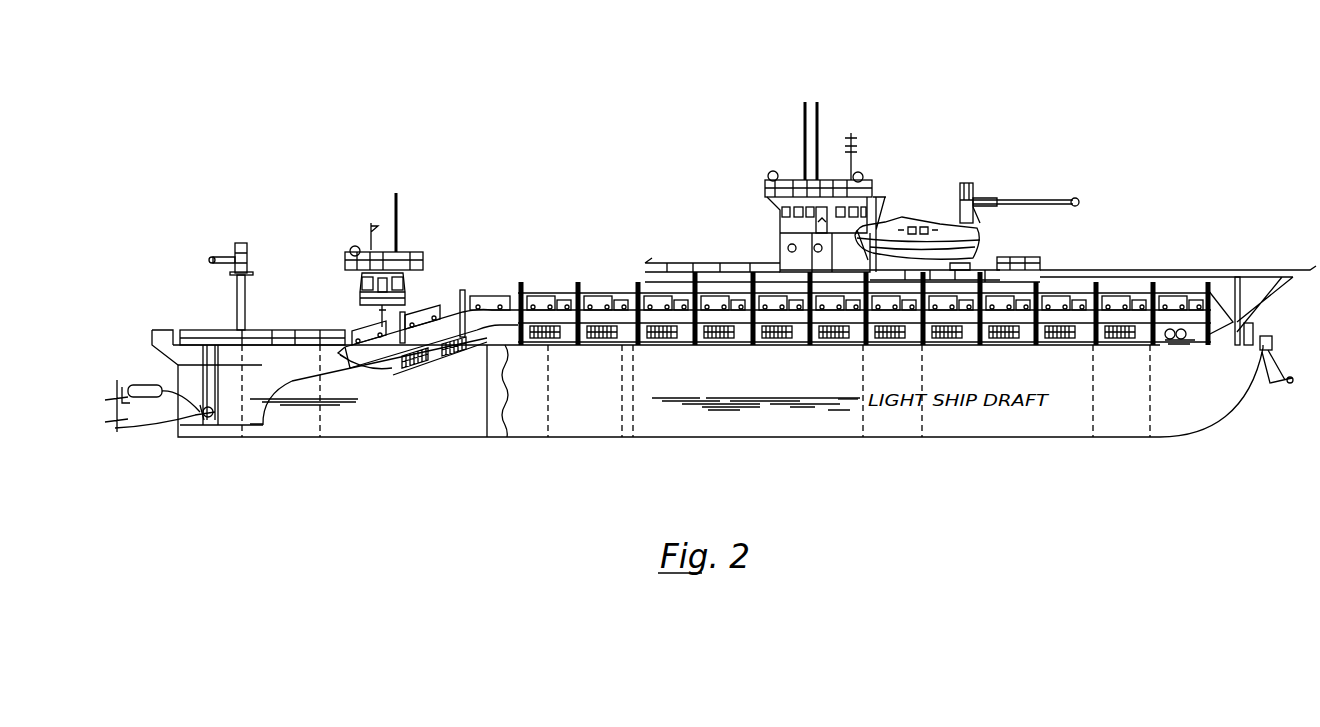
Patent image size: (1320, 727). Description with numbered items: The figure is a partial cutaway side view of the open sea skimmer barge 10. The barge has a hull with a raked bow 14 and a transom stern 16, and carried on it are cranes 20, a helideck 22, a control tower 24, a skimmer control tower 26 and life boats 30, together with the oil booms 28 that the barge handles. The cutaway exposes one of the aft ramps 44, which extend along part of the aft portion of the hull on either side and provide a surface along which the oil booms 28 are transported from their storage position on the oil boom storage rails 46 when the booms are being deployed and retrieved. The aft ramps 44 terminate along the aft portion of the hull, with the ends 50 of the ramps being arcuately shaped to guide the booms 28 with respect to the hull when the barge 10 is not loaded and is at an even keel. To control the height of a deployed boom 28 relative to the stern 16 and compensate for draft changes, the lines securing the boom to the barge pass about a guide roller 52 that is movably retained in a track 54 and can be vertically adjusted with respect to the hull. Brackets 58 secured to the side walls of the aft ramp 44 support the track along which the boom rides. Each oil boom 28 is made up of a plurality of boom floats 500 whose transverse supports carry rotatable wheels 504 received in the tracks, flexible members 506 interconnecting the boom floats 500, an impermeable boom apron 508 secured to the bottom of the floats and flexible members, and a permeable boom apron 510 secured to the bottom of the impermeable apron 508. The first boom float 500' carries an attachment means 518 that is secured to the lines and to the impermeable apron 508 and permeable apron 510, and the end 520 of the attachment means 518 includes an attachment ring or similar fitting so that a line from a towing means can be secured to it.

The open sea skimmer barge 10 is at (1135, 232).
The raked bow 14 is at (1248, 396).
The transom stern 16 is at (153, 353).
The cranes 20 is at (967, 187).
The helideck 22 is at (1207, 275).
The control tower 24 is at (828, 205).
The skimmer control tower 26 is at (397, 280).
The oil booms 28 is at (495, 298).
The life boats 30 is at (899, 224).
The aft ramps 44 is at (362, 390).
The oil boom storage rails 46 is at (980, 288).
The ends of the ramps 50 is at (263, 392).
The guide roller 52 is at (208, 410).
The track 54 is at (222, 368).
The brackets 58 is at (282, 383).
The boom floats 500 is at (431, 313).
The first boom float 500' is at (437, 414).
The rotatable wheels 504 is at (598, 307).
The flexible members 506 is at (427, 313).
The impermeable boom apron 508 is at (536, 318).
The permeable boom apron 510 is at (558, 342).
The attachment means 518 is at (337, 357).
The end of attachment means 520 is at (340, 347).